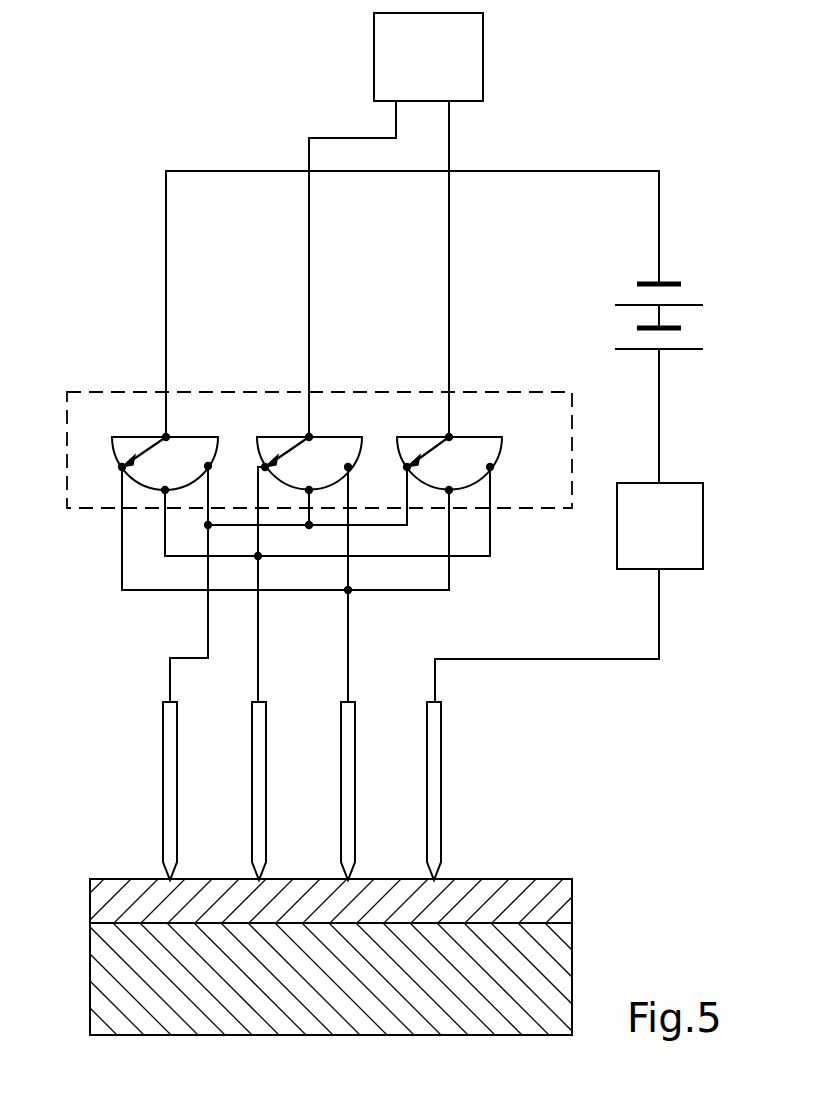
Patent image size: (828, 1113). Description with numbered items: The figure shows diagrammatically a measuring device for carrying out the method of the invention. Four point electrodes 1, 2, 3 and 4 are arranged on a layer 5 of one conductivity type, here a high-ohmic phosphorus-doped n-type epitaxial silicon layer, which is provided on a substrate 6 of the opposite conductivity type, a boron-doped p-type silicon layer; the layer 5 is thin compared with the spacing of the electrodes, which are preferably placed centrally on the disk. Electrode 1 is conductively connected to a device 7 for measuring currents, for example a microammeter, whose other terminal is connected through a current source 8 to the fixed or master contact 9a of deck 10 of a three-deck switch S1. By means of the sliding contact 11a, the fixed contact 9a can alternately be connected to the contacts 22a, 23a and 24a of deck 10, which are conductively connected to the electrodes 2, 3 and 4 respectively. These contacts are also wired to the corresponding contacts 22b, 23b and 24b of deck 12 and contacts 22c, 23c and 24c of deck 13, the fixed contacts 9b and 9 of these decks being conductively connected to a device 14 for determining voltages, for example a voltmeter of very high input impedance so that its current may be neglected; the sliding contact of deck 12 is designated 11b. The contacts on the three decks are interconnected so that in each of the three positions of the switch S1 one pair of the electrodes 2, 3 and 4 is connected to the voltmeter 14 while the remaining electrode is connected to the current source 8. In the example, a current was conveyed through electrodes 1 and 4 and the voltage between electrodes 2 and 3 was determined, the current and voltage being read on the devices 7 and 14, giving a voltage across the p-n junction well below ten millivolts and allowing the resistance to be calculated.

The electrode 1 is at (442, 853).
The electrode 2 is at (356, 853).
The electrode 3 is at (267, 853).
The electrode 4 is at (178, 853).
The layer 5 is at (545, 907).
The substrate 6 is at (555, 995).
The device for measuring currents 7 is at (640, 557).
The current source 8 is at (645, 316).
The fixed contact 9 is at (449, 437).
The fixed contact 9a is at (166, 437).
The fixed contact 9b is at (309, 437).
The deck 10 is at (185, 445).
The sliding contact 11a is at (143, 455).
The sliding contact 11b is at (284, 455).
The deck 12 is at (328, 447).
The deck 13 is at (465, 447).
The device for determining voltages 14 is at (388, 40).
The contact 22a is at (122, 469).
The contact 22b is at (350, 470).
The contact 22c is at (448, 492).
The contact 23a is at (163, 491).
The contact 23b is at (258, 467).
The contact 23c is at (492, 469).
The contact 24a is at (208, 468).
The contact 24b is at (308, 492).
The contact 24c is at (405, 469).
The three-deck switch S1 is at (100, 396).